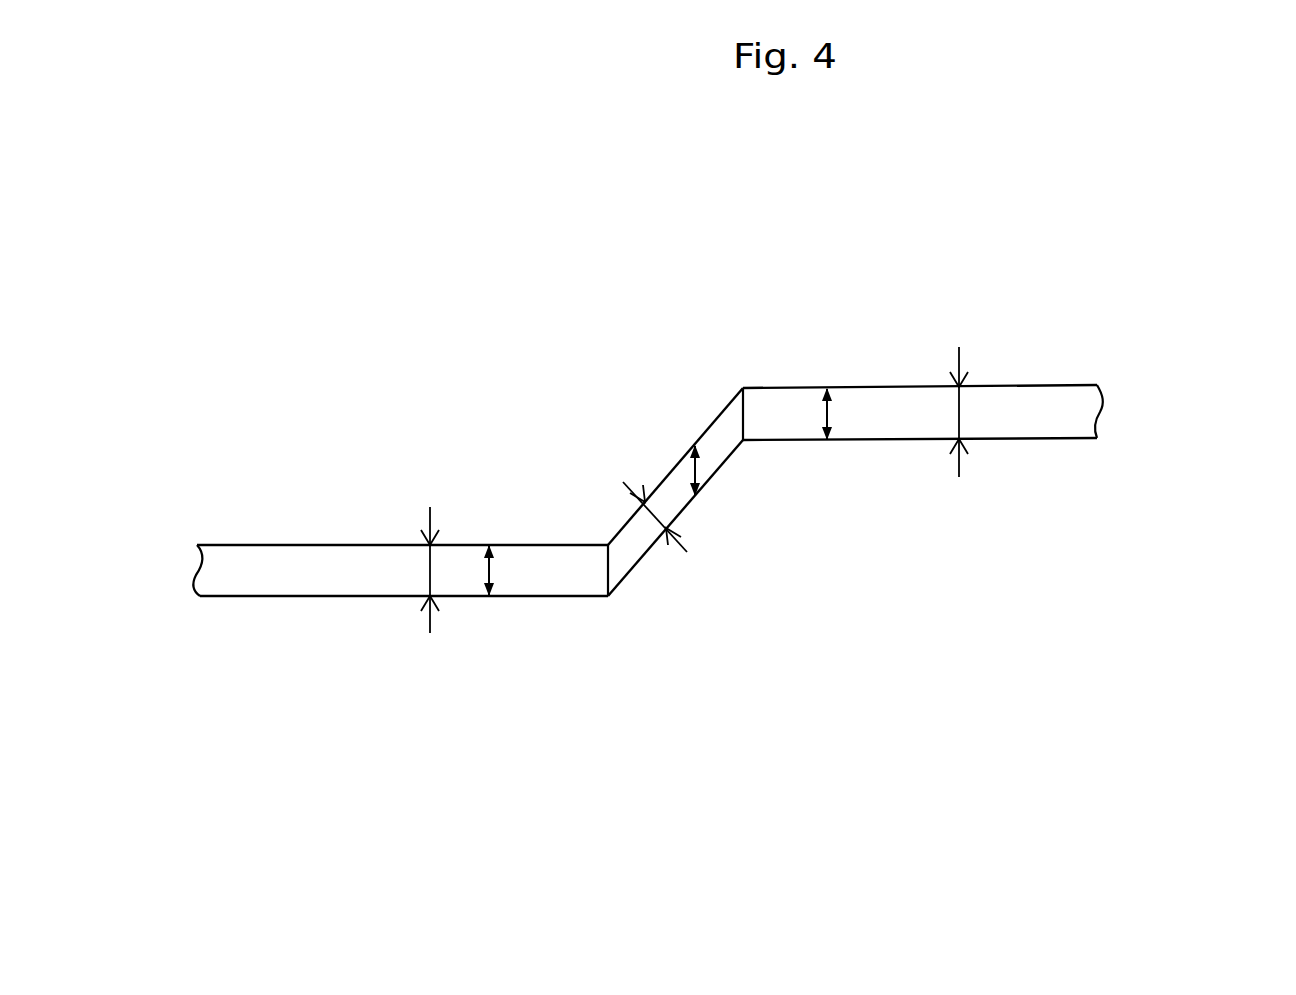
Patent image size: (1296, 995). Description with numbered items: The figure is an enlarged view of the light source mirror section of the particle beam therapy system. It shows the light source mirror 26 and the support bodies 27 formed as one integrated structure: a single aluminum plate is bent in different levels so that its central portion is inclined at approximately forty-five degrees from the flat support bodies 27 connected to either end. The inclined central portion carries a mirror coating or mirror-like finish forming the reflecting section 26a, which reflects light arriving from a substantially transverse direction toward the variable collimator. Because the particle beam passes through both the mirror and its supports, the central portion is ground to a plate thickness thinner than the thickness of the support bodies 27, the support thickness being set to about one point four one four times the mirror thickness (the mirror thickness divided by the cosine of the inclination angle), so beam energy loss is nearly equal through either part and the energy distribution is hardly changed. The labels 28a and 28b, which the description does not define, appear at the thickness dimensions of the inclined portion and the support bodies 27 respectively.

The light source mirror 26 is at (708, 430).
The reflecting section 26a is at (645, 552).
The support bodies 27 is at (402, 596).
The thickness of bent portion 28a is at (694, 469).
The thickness of flat plate portion 28b is at (489, 570).